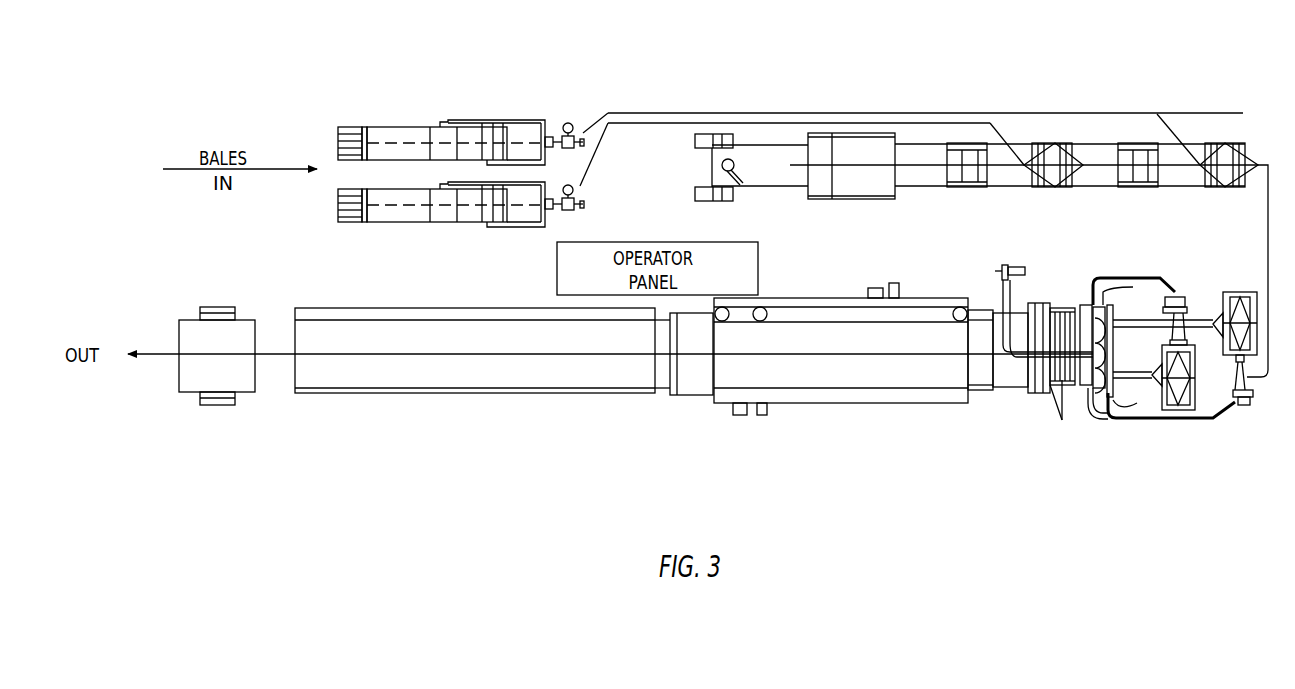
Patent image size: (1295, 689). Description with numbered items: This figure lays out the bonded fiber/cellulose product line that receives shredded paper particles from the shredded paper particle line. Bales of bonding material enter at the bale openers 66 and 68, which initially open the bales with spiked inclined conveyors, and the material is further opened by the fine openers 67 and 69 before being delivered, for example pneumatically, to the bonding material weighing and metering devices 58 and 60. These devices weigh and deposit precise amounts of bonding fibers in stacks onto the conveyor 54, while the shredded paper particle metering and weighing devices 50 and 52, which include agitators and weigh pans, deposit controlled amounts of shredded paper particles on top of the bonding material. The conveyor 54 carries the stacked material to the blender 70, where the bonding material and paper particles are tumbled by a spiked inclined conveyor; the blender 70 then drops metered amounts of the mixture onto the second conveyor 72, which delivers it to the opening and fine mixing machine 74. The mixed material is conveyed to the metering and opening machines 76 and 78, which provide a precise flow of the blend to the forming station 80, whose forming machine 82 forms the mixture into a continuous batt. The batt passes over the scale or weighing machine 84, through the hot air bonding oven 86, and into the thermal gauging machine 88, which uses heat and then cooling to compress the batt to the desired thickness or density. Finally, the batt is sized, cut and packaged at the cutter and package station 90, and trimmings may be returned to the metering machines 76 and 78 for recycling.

The shredded paper particle metering and weighing device 50 is at (1146, 138).
The shredded paper particle metering and weighing device 52 is at (983, 133).
The conveyor 54 is at (922, 157).
The bonding material weighing and metering device 58 is at (1230, 140).
The bonding material weighing and metering device 60 is at (1058, 140).
The bale opener 66 is at (408, 108).
The fine opener 67 is at (536, 108).
The bale opener 68 is at (388, 233).
The fine opener 69 is at (532, 245).
The blender 70 is at (853, 128).
The second conveyor 72 is at (770, 148).
The opening and fine mixing machine 74 is at (718, 118).
The metering and opening machine 76 is at (1187, 337).
The metering and opening machine 78 is at (1235, 281).
The forming station 80 is at (1077, 400).
The forming machine 82 is at (1082, 305).
The scale or weighing machine 84 is at (1058, 300).
The hot air bonding oven 86 is at (815, 295).
The thermal gauging machine 88 is at (423, 299).
The cutter and package station 90 is at (243, 409).